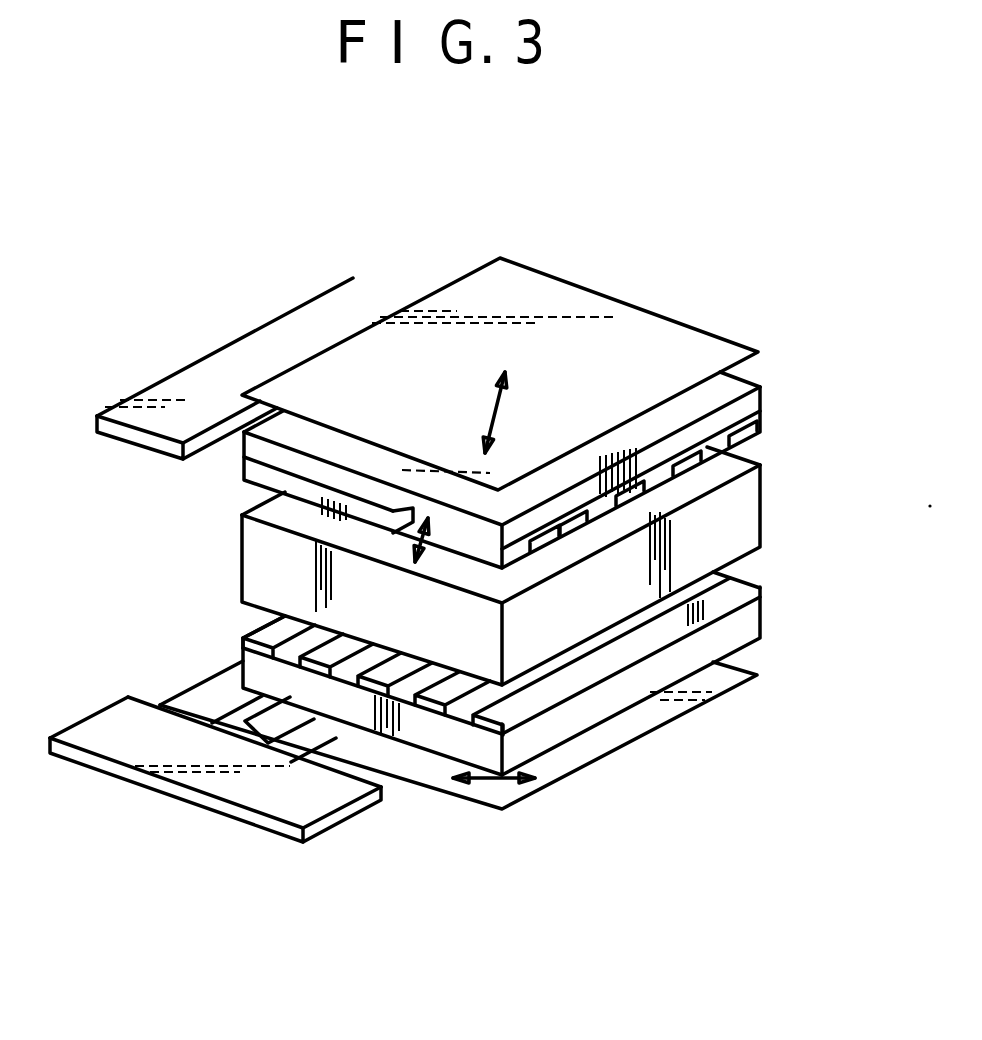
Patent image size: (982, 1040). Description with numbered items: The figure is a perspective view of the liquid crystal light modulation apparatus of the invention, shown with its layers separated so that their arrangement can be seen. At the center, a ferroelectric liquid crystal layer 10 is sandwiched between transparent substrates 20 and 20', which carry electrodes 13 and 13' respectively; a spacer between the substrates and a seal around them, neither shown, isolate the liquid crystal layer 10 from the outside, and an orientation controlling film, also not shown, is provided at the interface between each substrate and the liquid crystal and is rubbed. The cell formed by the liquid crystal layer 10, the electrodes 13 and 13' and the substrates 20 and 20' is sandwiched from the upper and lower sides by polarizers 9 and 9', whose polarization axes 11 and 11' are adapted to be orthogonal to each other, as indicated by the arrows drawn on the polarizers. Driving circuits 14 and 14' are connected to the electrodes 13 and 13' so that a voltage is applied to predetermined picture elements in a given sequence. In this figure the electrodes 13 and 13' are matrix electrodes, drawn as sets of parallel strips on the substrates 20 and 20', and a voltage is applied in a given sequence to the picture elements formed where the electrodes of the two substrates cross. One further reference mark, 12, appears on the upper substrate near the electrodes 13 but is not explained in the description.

The polarizer 9 is at (500, 374).
The polarizer 9' is at (475, 735).
The ferroelectric liquid crystal layer 10 is at (750, 525).
The polarization axis 11 is at (520, 412).
The polarization axis 11' is at (506, 814).
The electrode gap indication 12 is at (410, 540).
The electrode 13 is at (463, 481).
The electrode 13' is at (471, 679).
The driving circuit 14 is at (225, 403).
The driving circuit 14' is at (215, 783).
The transparent substrate 20 is at (532, 470).
The transparent substrate 20' is at (537, 668).